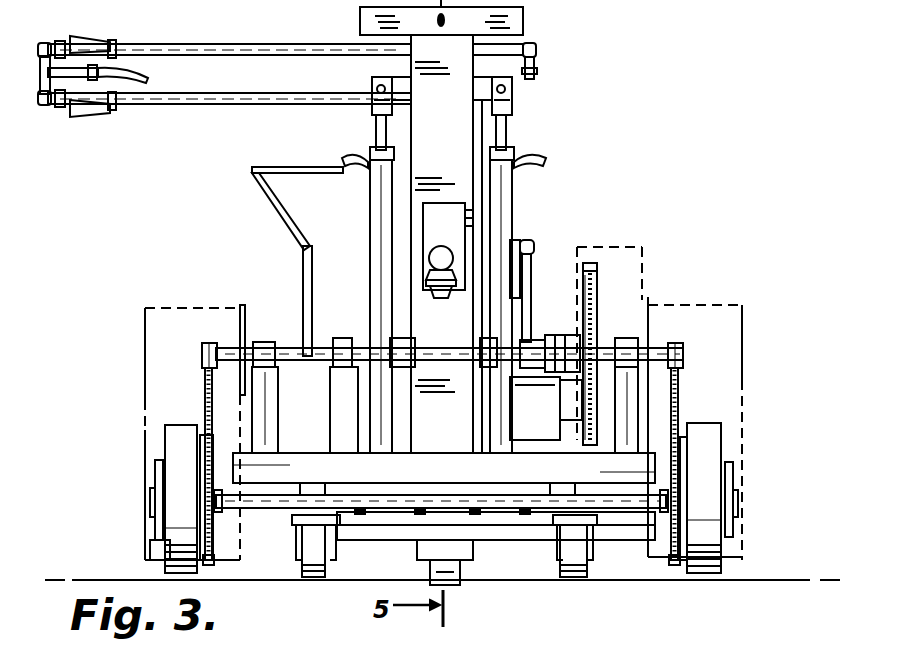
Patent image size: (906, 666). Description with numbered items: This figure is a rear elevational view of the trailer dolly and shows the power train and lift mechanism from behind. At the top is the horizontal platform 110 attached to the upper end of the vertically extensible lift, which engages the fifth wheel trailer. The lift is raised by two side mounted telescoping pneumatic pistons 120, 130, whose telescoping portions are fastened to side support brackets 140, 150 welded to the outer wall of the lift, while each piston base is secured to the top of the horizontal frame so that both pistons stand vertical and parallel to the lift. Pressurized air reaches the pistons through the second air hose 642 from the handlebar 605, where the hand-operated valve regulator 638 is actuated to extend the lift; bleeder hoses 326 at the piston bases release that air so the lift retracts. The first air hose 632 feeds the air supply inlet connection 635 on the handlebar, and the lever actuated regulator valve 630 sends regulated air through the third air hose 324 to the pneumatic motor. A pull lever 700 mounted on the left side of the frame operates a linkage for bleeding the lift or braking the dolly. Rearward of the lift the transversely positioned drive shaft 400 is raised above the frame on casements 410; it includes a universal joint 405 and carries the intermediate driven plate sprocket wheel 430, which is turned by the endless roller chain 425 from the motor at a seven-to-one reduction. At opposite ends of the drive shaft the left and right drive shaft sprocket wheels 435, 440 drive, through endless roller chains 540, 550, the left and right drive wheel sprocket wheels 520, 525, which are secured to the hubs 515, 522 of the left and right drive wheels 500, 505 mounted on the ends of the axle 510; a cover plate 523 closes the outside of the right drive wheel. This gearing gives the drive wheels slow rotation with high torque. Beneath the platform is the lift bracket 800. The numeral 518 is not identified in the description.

The horizontal platform 110 is at (523, 20).
The pneumatic piston 120 is at (370, 215).
The pneumatic piston 130 is at (512, 215).
The side support bracket 140 is at (372, 85).
The side support bracket 150 is at (512, 90).
The third air hose 324 is at (538, 70).
The bleeder hoses 326 is at (370, 350).
The drive shaft 400 is at (282, 348).
The universal joint 405 is at (627, 338).
The casements 410 is at (444, 468).
The endless roller chain 425 is at (592, 265).
The intermediate driven plate sprocket wheel 430 is at (598, 272).
The left drive shaft sprocket wheel 435 is at (202, 356).
The right drive shaft sprocket wheel 440 is at (683, 356).
The left drive wheel 500 is at (178, 458).
The right drive wheel 505 is at (708, 462).
The axle 510 is at (268, 520).
The hub 515 is at (170, 545).
The wheel bracket 518 is at (157, 522).
The left drive wheel sprocket wheel 520 is at (165, 432).
The hub 522 is at (668, 518).
The cover plate 523 is at (738, 520).
The right drive wheel sprocket wheel 525 is at (700, 445).
The endless roller chain 540 is at (205, 395).
The endless roller chain 550 is at (678, 400).
The handlebar 605 is at (296, 44).
The lever actuated regulator valve 630 is at (95, 36).
The first air hose 632 is at (148, 78).
The air supply inlet connection 635 is at (48, 106).
The hand-operated valve regulator 638 is at (95, 117).
The second air hose 642 is at (342, 160).
The pull lever 700 is at (279, 222).
The lift bracket 800 is at (482, 555).